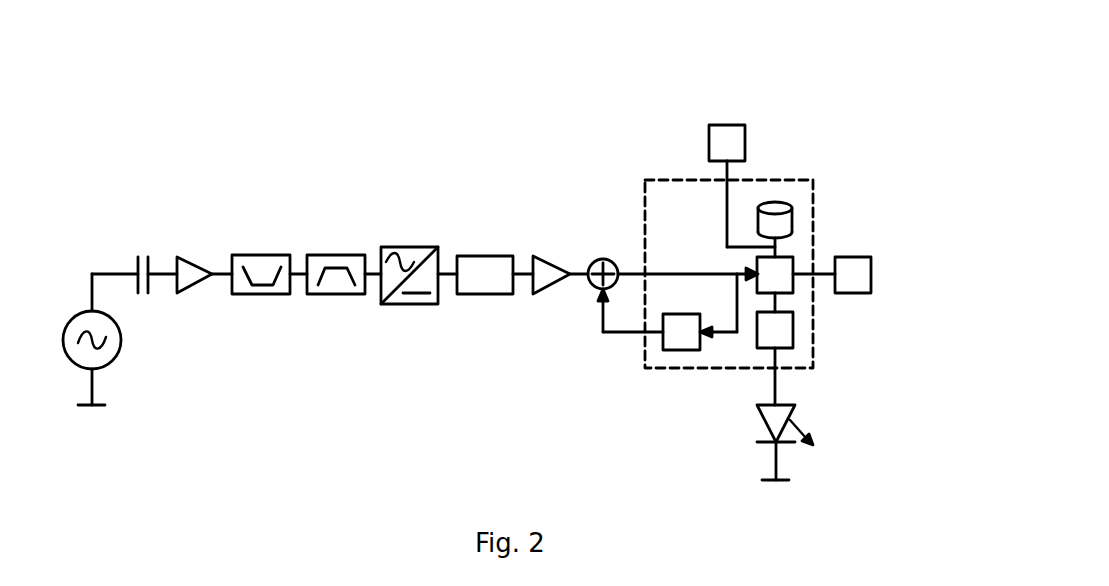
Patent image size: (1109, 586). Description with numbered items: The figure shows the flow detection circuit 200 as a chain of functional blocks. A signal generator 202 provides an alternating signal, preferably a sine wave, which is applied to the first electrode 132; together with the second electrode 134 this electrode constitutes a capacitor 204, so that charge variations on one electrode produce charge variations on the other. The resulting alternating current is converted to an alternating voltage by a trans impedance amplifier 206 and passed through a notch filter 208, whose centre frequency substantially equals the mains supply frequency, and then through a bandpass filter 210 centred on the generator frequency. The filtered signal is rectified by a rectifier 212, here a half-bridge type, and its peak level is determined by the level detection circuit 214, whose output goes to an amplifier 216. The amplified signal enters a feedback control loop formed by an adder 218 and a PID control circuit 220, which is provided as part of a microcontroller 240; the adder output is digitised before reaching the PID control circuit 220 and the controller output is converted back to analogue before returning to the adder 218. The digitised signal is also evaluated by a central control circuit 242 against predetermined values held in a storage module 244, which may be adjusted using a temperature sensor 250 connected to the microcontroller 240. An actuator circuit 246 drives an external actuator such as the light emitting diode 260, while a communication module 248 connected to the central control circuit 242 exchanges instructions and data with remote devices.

The flow detection circuit 200 is at (99, 68).
The first electrode 132 is at (136, 265).
The second electrode 134 is at (150, 257).
The signal generator 202 is at (70, 317).
The capacitor 204 is at (131, 204).
The trans impedance amplifier 206 is at (178, 257).
The notch filter 208 is at (262, 255).
The bandpass filter 210 is at (340, 255).
The rectifier 212 is at (412, 248).
The level detection circuit 214 is at (502, 256).
The amplifier 216 is at (557, 257).
The adder 218 is at (601, 258).
The PID control circuit 220 is at (663, 314).
The microcontroller 240 is at (813, 182).
The central control circuit 242 is at (793, 257).
The storage module 244 is at (792, 207).
The actuator circuit 246 is at (793, 327).
The communication module 248 is at (728, 125).
The temperature sensor 250 is at (871, 275).
The light emitting diode 260 is at (795, 415).